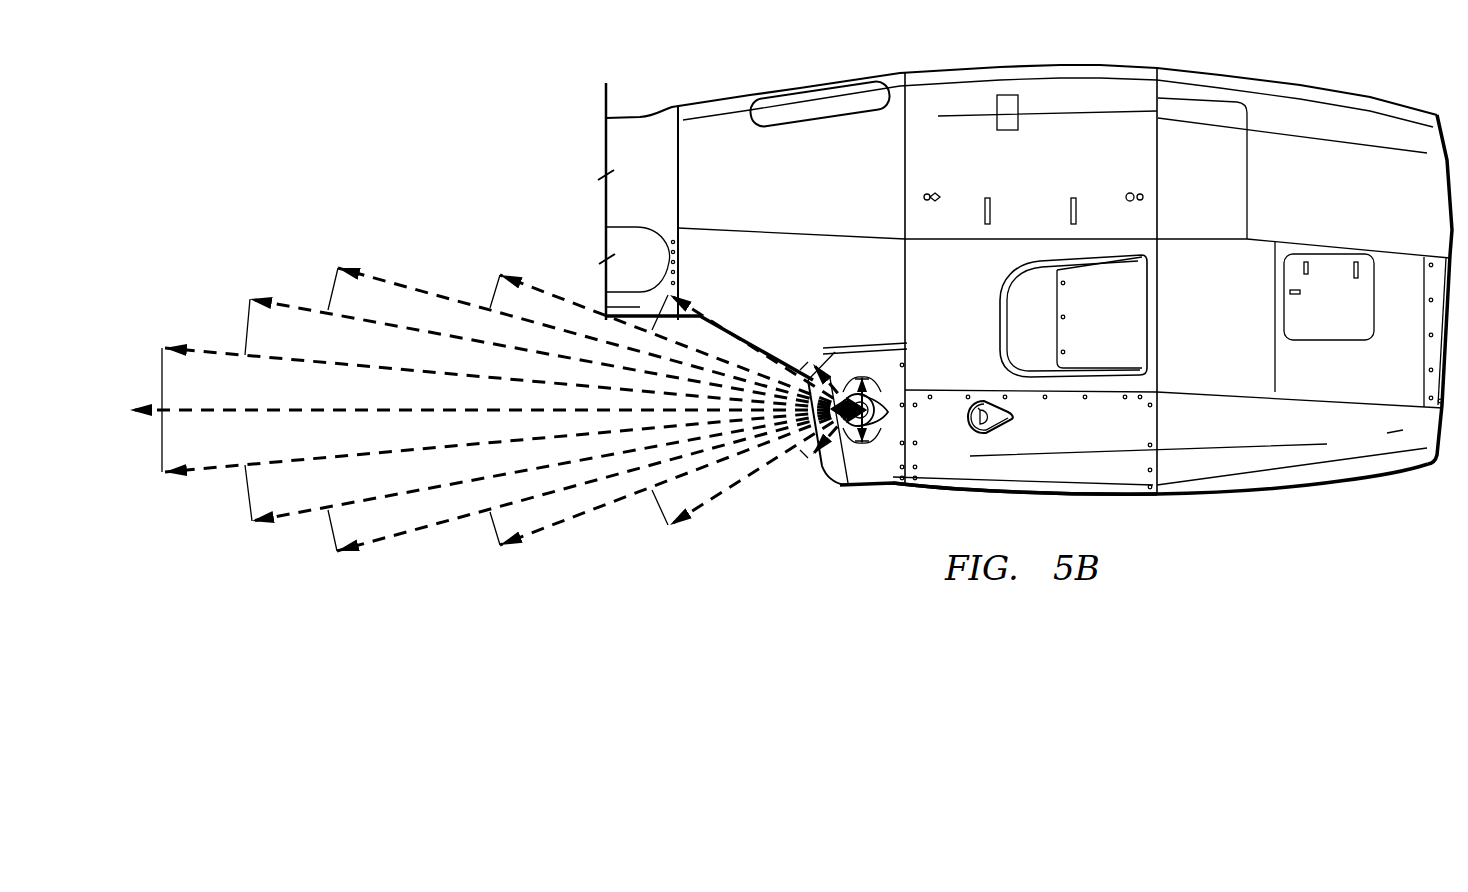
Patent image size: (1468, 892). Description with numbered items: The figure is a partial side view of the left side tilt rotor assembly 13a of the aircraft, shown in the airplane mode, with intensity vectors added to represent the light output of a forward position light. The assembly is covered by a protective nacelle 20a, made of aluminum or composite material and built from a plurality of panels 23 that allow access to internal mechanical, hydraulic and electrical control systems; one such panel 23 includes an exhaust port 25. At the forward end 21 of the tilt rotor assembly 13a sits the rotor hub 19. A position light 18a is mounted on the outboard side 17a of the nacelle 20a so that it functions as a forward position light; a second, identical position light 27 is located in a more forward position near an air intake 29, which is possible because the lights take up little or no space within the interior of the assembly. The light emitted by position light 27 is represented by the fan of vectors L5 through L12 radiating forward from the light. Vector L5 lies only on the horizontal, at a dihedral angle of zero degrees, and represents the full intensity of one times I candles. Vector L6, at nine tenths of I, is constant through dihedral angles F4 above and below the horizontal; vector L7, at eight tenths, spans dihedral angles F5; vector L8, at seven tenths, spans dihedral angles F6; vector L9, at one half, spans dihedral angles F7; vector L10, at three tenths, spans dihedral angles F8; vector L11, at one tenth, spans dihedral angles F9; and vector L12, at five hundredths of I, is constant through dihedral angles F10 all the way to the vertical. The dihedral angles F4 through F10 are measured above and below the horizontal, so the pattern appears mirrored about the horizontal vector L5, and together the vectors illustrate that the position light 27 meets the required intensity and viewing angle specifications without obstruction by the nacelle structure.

The tilt rotor assembly 13a is at (1146, 341).
The outboard side 17a is at (1060, 507).
The position light 18a is at (1020, 425).
The rotor hub 19 is at (621, 187).
The protective nacelle 20a is at (1021, 92).
The forward end 21 is at (755, 204).
The panels 23 is at (1175, 280).
The exhaust port 25 is at (1102, 316).
The position light 27 is at (893, 410).
The air intake 29 is at (857, 441).
The vector L5 is at (491, 382).
The vector L6 is at (508, 407).
The vector L7 is at (551, 410).
The vector L8 is at (594, 411).
The vector L9 is at (676, 411).
The vector L10 is at (761, 408).
The vector L11 is at (825, 412).
The vector L12 is at (911, 412).
The dihedral angles F4 is at (148, 408).
The dihedral angles F5 is at (227, 413).
The dihedral angles F6 is at (316, 415).
The dihedral angles F7 is at (473, 404).
The dihedral angles F8 is at (642, 394).
The dihedral angles F9 is at (786, 408).
The dihedral angles F10 is at (877, 411).